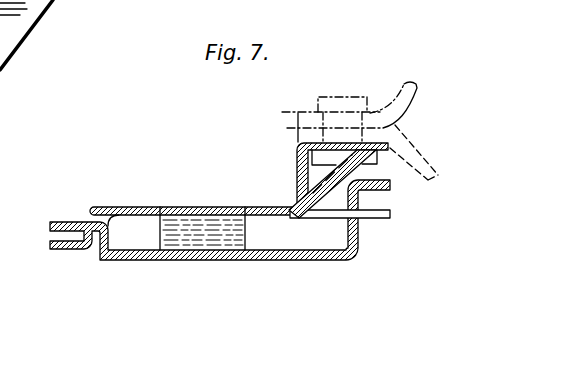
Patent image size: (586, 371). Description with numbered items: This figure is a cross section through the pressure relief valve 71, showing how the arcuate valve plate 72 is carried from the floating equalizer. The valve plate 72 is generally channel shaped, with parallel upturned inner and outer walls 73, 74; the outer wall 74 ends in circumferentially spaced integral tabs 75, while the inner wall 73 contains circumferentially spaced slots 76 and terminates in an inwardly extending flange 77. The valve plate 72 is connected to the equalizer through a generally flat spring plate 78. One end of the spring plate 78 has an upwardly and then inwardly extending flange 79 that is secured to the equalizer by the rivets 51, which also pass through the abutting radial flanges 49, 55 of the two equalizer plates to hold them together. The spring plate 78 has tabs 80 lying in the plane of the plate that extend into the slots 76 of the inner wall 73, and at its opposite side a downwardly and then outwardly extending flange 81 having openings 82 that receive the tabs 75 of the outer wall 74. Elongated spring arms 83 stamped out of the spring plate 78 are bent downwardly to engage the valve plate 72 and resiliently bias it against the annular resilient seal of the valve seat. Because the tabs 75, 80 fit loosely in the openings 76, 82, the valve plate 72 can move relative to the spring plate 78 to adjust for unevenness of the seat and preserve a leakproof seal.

The radial flange 49 is at (282, 111).
The rivet 51 is at (375, 70).
The radial flange 55 is at (287, 130).
The pressure relief valve 71 is at (140, 278).
The valve plate 72 is at (307, 262).
The inner wall 73 is at (358, 246).
The outer wall 74 is at (100, 259).
The tab 75 is at (64, 222).
The slot 76 is at (359, 226).
The inwardly extending flange 77 is at (390, 191).
The spring plate 78 is at (278, 206).
The upwardly and inwardly extending flange 79 is at (408, 131).
The tab 80 is at (330, 213).
The downwardly and outwardly extending flange 81 is at (53, 250).
The opening 82 is at (88, 207).
The spring arm 83 is at (189, 261).